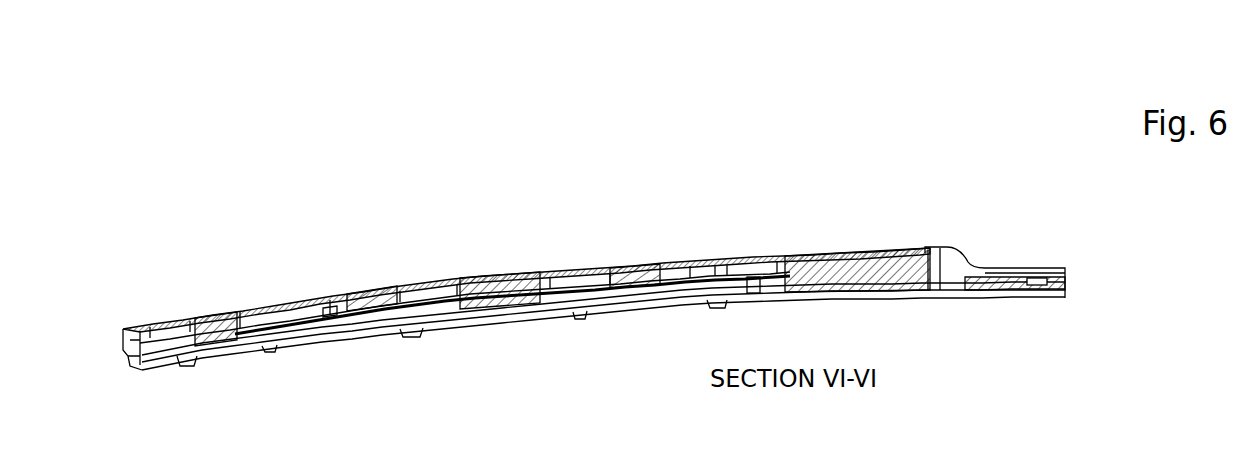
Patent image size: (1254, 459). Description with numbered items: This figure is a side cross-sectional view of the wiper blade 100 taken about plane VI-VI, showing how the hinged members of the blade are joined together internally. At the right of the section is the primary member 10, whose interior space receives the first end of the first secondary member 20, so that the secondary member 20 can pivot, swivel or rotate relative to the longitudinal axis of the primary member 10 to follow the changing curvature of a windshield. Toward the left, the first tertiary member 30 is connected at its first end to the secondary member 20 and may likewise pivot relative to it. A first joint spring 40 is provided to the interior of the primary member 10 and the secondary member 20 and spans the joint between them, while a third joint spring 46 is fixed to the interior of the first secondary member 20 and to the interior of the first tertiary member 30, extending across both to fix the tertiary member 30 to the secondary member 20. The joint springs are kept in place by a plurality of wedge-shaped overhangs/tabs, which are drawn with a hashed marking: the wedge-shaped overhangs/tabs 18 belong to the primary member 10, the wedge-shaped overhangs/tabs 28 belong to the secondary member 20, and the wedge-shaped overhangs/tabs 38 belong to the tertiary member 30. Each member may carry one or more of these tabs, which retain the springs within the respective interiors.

The wiper blade 100 is at (110, 125).
The primary member 10 is at (840, 255).
The first secondary member 20 is at (507, 262).
The first tertiary member 30 is at (218, 310).
The third joint spring 46 is at (358, 330).
The first joint spring 40 is at (637, 285).
The wedge-shaped overhangs/tabs of the tertiary member 38 is at (264, 343).
The wedge-shaped overhangs/tabs of the secondary member 28 is at (440, 335).
The wedge-shaped overhangs/tabs of the primary member 18 is at (753, 300).